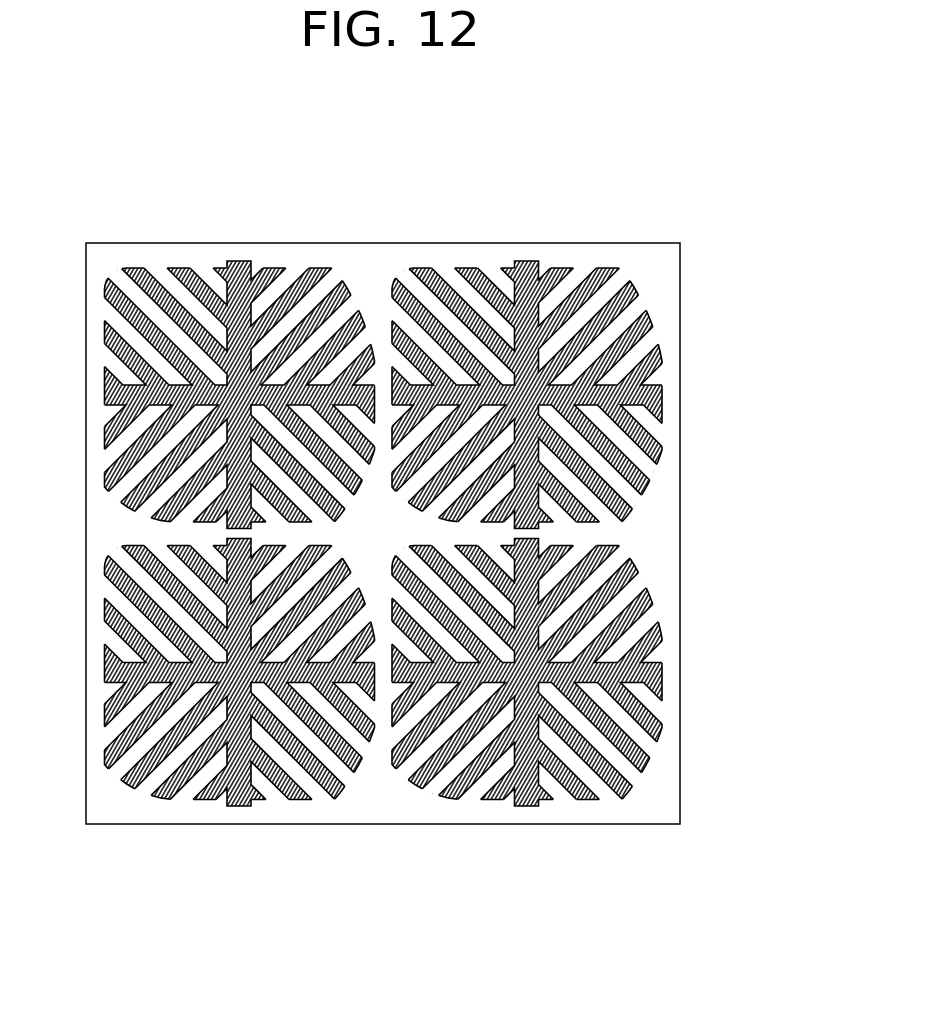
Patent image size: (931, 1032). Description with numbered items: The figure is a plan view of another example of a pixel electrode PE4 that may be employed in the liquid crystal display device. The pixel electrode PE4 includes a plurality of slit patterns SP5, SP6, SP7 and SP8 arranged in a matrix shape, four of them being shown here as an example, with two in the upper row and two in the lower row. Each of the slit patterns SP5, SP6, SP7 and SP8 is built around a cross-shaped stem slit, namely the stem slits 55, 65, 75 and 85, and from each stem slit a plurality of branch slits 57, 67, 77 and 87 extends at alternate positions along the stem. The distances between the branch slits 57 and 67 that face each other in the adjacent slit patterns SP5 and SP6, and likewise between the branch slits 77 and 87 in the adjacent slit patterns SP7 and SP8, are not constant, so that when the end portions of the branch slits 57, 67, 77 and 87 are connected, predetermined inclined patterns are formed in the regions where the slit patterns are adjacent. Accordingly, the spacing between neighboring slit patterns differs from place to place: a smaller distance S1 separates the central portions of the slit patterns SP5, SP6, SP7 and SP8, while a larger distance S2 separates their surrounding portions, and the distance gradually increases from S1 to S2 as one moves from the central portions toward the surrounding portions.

The pixel electrode PE4 is at (701, 308).
The slit pattern SP5 is at (196, 374).
The slit pattern SP6 is at (578, 377).
The slit pattern SP7 is at (207, 710).
The slit pattern SP8 is at (570, 710).
The stem slit 55 is at (240, 261).
The branch slits 57 is at (104, 330).
The stem slit 65 is at (527, 261).
The branch slits 67 is at (640, 290).
The stem slit 75 is at (240, 806).
The branch slits 77 is at (104, 612).
The stem slit 85 is at (527, 806).
The branch slits 87 is at (425, 798).
The distance between central portions S1 is at (375, 440).
The distance between surrounding portions S2 is at (427, 228).